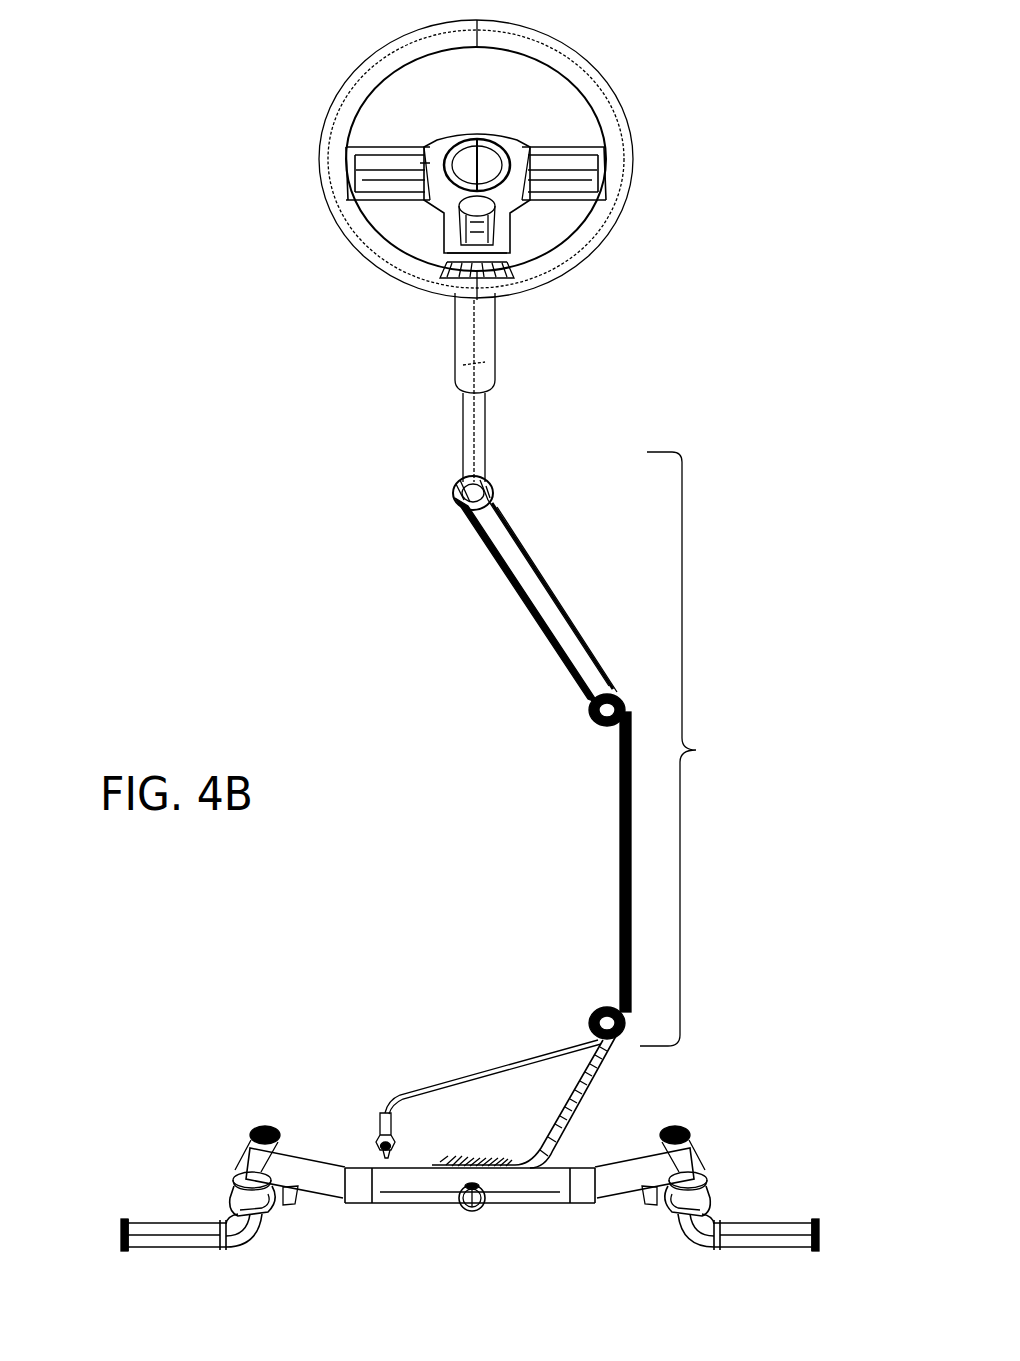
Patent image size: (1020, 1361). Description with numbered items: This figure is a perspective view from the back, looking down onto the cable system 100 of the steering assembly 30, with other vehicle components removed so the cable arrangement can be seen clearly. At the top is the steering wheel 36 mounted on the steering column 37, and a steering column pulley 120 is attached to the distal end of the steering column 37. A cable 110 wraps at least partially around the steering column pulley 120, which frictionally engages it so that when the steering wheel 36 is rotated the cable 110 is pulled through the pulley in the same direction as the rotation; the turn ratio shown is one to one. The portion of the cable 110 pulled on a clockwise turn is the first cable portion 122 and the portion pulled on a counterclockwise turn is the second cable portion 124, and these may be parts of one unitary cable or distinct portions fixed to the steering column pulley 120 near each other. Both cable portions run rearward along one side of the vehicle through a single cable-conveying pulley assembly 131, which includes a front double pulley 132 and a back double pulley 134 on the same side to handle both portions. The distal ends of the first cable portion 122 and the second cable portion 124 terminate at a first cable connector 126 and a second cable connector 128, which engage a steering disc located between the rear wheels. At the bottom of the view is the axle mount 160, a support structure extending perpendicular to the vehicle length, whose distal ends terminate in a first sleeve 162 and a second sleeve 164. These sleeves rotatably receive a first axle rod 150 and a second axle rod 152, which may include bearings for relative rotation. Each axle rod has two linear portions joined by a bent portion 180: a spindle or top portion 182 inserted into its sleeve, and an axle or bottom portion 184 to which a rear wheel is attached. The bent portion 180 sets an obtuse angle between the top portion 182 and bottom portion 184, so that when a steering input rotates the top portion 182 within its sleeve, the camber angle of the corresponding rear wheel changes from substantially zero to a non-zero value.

The steering assembly 30 is at (322, 72).
The steering wheel 36 is at (323, 128).
The steering column 37 is at (453, 363).
The cable system 100 is at (390, 645).
The cable 110 is at (620, 830).
The steering column pulley 120 is at (457, 487).
The first cable portion 122 is at (497, 545).
The second cable portion 124 is at (508, 513).
The first cable connector 126 is at (497, 1153).
The second cable connector 128 is at (382, 1113).
The pulley assembly 131 is at (707, 749).
The front double pulley 132 is at (587, 710).
The back double pulley 134 is at (595, 1015).
The first axle rod 150 is at (735, 1203).
The second axle rod 152 is at (180, 1198).
The axle mount 160 is at (515, 1188).
The first sleeve 162 is at (692, 1150).
The second sleeve 164 is at (253, 1150).
The bent portion 180 is at (243, 1240).
The top portion 182 is at (272, 1124).
The bottom portion 184 is at (163, 1237).